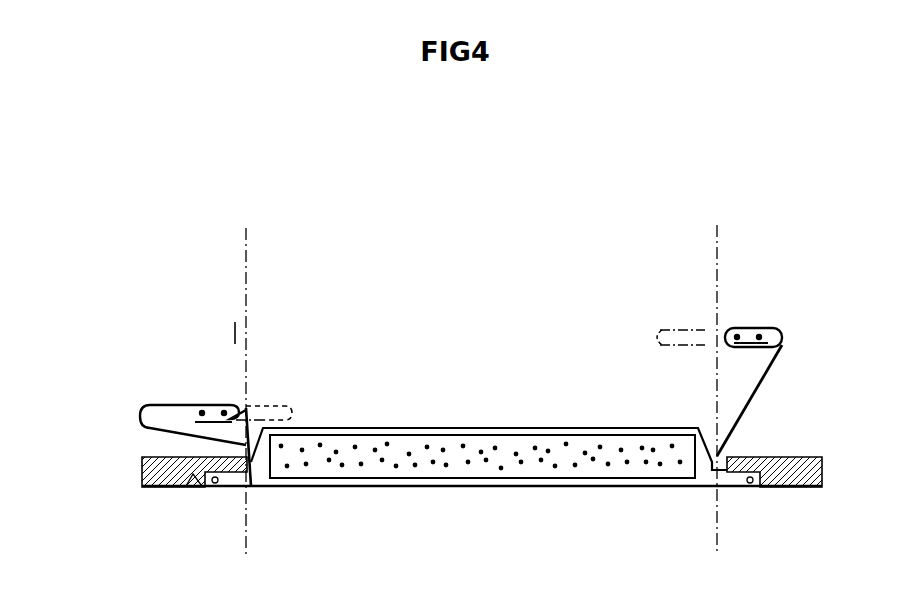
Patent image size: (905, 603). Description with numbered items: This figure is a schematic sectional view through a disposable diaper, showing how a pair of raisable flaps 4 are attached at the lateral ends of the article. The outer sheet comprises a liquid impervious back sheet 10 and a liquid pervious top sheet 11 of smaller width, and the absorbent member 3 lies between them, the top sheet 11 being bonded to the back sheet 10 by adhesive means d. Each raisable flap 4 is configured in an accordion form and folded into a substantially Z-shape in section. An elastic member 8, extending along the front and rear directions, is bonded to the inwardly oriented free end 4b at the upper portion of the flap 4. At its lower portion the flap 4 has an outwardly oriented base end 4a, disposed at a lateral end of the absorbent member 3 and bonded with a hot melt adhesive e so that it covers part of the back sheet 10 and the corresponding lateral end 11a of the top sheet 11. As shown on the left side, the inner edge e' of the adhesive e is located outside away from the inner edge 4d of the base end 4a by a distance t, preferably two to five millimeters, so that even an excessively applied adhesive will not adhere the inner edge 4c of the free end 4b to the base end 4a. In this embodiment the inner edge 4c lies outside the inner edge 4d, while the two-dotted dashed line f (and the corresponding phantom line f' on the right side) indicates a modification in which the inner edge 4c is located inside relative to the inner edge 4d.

The absorbent member 3 is at (513, 466).
The raisable flap 4 is at (140, 412).
The base end 4a is at (165, 457).
The free end 4b is at (201, 404).
The inner edge of the free end 4c is at (248, 410).
The inner edge of the base end 4d is at (254, 408).
The elastic member 8 is at (198, 405).
The back sheet 10 is at (387, 488).
The top sheet 11 is at (440, 428).
The lateral end of the top sheet 11a is at (188, 484).
The adhesive means d is at (215, 484).
The hot melt adhesive e is at (479, 475).
The inner edge of the adhesive e' is at (471, 414).
The two-dotted dashed line f is at (300, 485).
The fold line f' is at (670, 297).
The distance t is at (205, 333).